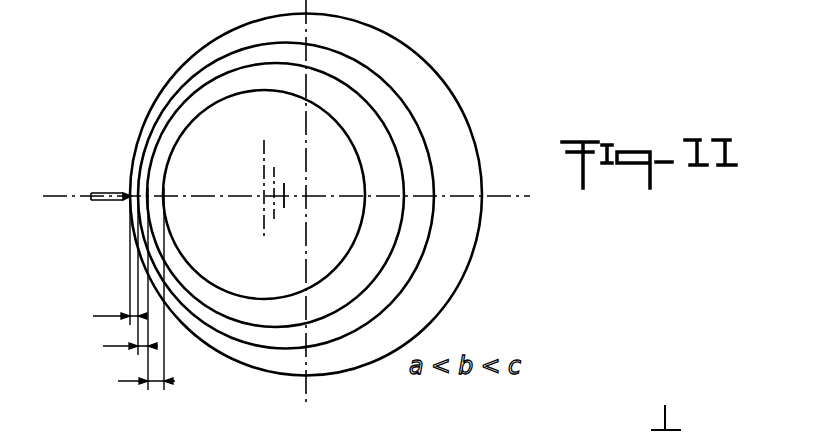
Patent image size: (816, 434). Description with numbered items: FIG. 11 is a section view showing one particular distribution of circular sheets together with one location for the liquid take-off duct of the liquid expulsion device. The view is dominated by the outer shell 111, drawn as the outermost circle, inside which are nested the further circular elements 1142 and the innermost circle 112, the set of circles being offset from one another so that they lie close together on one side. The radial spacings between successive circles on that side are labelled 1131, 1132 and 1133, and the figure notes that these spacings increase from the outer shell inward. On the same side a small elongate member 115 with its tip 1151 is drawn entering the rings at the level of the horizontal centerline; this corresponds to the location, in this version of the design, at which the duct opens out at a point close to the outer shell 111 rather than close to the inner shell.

The outer shell 111 is at (466, 118).
The intermediate rings 1142 is at (400, 97).
The inner ring 112 is at (357, 161).
The first gap 1131 is at (132, 188).
The second gap 1132 is at (143, 170).
The third gap 1133 is at (158, 176).
The pin 115 is at (103, 192).
The pin tip 1151 is at (124, 203).